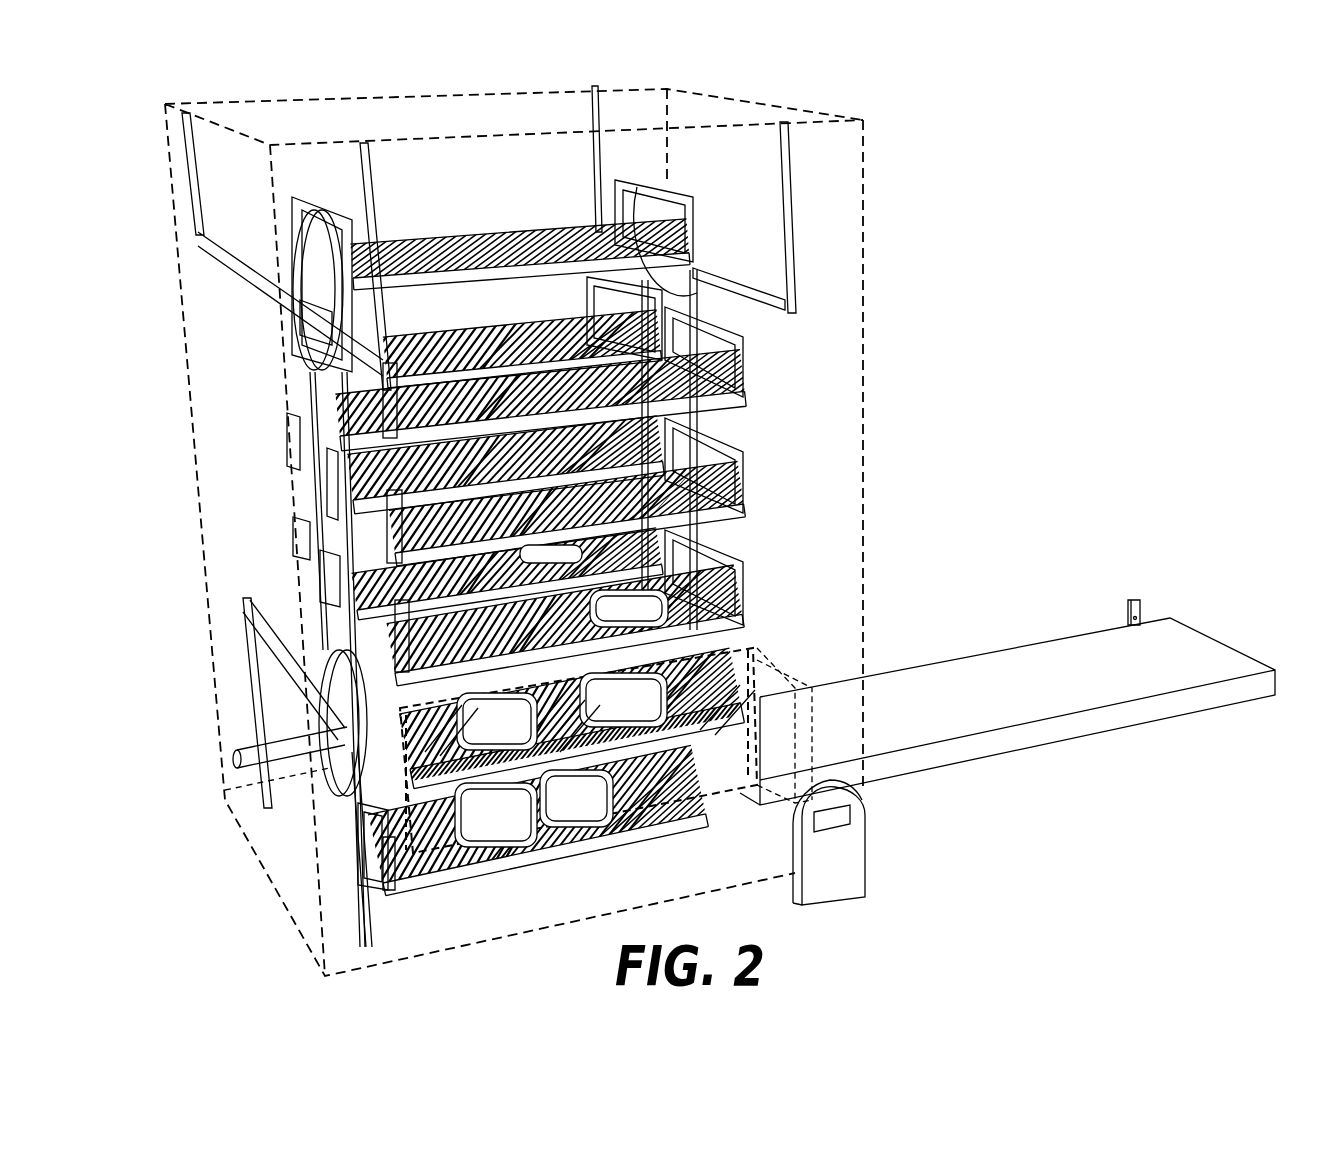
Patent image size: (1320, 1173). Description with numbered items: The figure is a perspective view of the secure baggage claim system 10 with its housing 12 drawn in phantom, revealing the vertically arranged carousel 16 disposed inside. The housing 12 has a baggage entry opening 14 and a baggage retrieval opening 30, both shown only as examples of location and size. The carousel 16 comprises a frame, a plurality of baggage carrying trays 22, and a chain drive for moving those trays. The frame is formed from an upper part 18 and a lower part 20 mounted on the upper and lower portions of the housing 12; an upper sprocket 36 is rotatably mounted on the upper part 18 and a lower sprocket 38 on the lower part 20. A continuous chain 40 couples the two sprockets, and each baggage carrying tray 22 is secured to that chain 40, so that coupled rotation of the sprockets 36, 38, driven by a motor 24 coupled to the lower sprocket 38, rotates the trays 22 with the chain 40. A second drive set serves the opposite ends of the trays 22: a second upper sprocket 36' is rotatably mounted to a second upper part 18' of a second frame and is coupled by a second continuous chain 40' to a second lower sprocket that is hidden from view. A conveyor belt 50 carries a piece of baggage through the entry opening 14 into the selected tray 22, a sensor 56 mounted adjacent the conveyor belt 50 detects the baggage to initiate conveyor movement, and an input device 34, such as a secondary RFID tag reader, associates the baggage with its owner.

The secure baggage claim system 10 is at (940, 245).
The housing 12 is at (270, 118).
The baggage entry opening 14 is at (772, 660).
The vertically arranged carousel 16 is at (487, 182).
The upper part of the frame 18 is at (241, 235).
The second upper part of a second frame 18' is at (769, 217).
The lower part of the frame 20 is at (257, 687).
The baggage carrying tray 22 is at (291, 343).
The motor 24 is at (281, 750).
The baggage retrieval opening 30 is at (449, 843).
The input device 34 is at (835, 890).
The upper sprocket 36 is at (235, 270).
The second upper sprocket 36' is at (656, 216).
The lower sprocket 38 is at (335, 675).
The continuous chain 40 is at (286, 595).
The second continuous chain 40' is at (682, 451).
The conveyor belt 50 is at (1243, 665).
The sensor 56 is at (1142, 603).